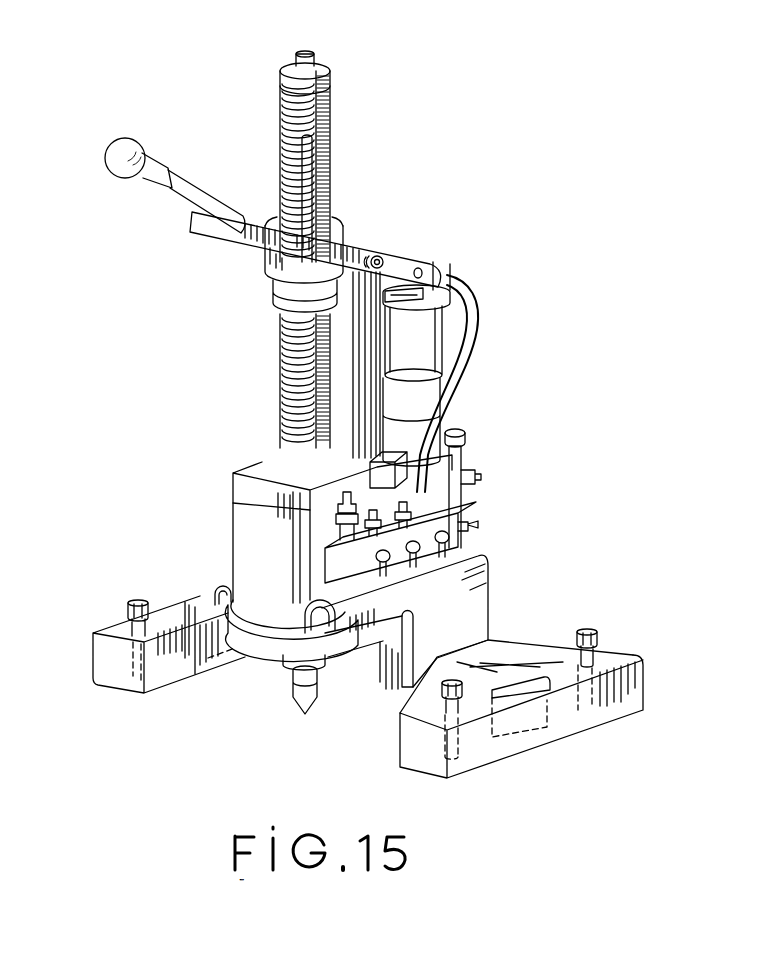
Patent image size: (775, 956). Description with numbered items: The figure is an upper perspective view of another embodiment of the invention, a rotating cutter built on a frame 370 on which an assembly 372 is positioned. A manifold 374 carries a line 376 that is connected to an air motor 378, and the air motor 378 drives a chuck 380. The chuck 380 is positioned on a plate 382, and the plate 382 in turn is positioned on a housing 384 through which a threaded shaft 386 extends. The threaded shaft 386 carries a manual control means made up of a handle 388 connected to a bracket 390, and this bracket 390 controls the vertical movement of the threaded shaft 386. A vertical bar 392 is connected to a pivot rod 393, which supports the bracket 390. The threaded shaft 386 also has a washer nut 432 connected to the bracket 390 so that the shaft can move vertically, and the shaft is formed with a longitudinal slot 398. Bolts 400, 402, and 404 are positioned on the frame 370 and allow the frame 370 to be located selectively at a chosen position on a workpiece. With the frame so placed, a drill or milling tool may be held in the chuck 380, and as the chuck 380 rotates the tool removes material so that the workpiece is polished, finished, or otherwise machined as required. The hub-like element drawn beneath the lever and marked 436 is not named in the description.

The frame 370 is at (604, 727).
The assembly 372 is at (466, 591).
The manifold 374 is at (480, 526).
The line 376 is at (480, 368).
The air motor 378 is at (418, 366).
The chuck 380 is at (297, 703).
The plate 382 is at (273, 643).
The housing 384 is at (250, 537).
The threaded shaft 386 is at (333, 104).
The handle 388 is at (148, 180).
The bracket 390 is at (372, 233).
The vertical bar 392 is at (372, 330).
The pivot rod 393 is at (440, 268).
The longitudinal slot 398 is at (315, 183).
The bolt 400 is at (598, 638).
The bolt 402 is at (440, 690).
The bolt 404 is at (133, 603).
The washer nut 432 is at (395, 257).
The hub 436 is at (303, 255).